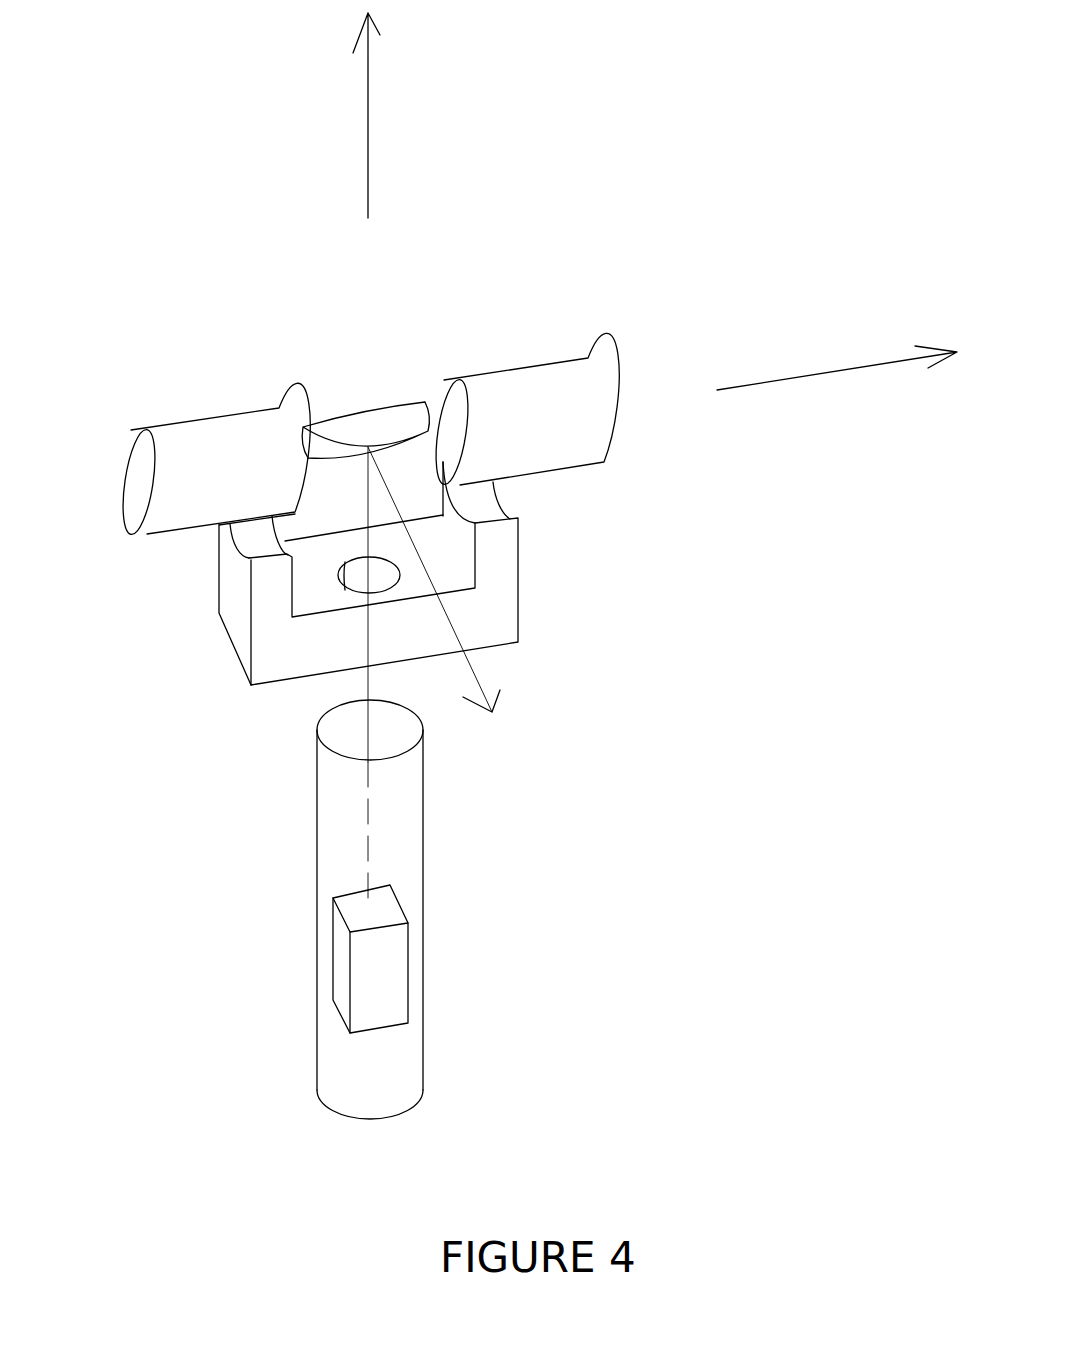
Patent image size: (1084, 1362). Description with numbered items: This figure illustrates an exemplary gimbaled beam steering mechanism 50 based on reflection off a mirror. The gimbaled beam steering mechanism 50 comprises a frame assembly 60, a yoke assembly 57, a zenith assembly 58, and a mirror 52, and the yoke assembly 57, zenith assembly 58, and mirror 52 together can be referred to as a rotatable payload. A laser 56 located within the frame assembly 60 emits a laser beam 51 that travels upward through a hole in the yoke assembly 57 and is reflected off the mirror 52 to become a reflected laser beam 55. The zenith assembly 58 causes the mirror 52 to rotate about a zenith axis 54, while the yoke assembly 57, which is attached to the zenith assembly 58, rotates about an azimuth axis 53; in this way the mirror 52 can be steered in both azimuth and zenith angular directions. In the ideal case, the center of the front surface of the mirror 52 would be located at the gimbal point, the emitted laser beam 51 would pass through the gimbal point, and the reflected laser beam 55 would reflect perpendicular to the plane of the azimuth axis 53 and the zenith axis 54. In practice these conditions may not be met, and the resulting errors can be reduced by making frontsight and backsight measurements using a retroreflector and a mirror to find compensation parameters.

The gimbaled beam steering mechanism 50 is at (143, 330).
The laser beam 51 is at (367, 693).
The mirror 52 is at (342, 424).
The azimuth axis 53 is at (368, 160).
The zenith axis 54 is at (781, 377).
The reflected laser beam 55 is at (472, 673).
The laser 56 is at (407, 942).
The yoke assembly 57 is at (520, 540).
The zenith assembly 58 is at (538, 360).
The frame assembly 60 is at (424, 850).